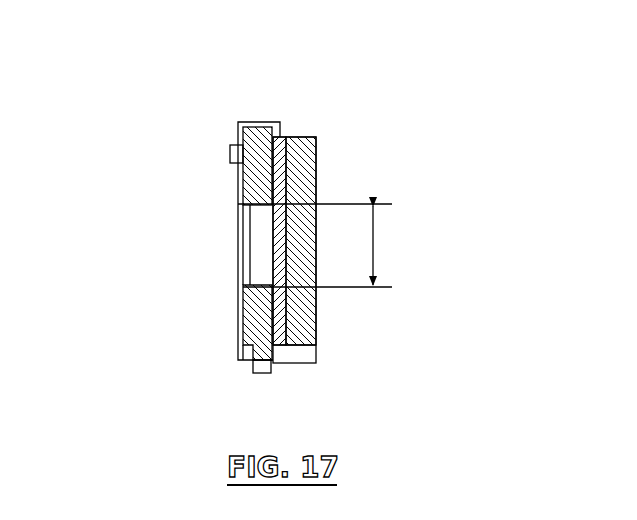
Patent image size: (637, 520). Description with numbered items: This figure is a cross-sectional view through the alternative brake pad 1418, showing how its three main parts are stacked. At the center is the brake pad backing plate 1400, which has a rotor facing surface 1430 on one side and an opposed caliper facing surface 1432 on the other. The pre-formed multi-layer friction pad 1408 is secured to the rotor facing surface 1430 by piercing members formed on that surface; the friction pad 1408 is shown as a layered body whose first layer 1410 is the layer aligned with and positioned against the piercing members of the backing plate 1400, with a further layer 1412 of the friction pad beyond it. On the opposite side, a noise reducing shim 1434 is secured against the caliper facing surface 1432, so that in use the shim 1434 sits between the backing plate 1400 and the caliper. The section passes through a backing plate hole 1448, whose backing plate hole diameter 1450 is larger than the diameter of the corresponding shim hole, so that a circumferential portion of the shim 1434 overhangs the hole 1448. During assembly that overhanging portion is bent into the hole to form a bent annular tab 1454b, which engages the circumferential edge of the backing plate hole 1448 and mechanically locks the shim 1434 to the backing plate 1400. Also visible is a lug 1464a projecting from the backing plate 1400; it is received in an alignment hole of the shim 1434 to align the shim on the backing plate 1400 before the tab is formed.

The brake pad backing plate 1400 is at (293, 253).
The multi-layer friction pad 1408 is at (365, 248).
The first layer 1410 is at (278, 148).
The second layer 1412 is at (303, 178).
The brake pad 1418 is at (418, 70).
The rotor facing surface 1430 is at (276, 323).
The caliper facing surface 1432 is at (238, 328).
The shim 1434 is at (239, 253).
The backing plate hole 1448 is at (248, 218).
The backing plate hole diameter 1450 is at (373, 247).
The bent annular tab 1454b is at (247, 278).
The lug 1464a is at (230, 157).